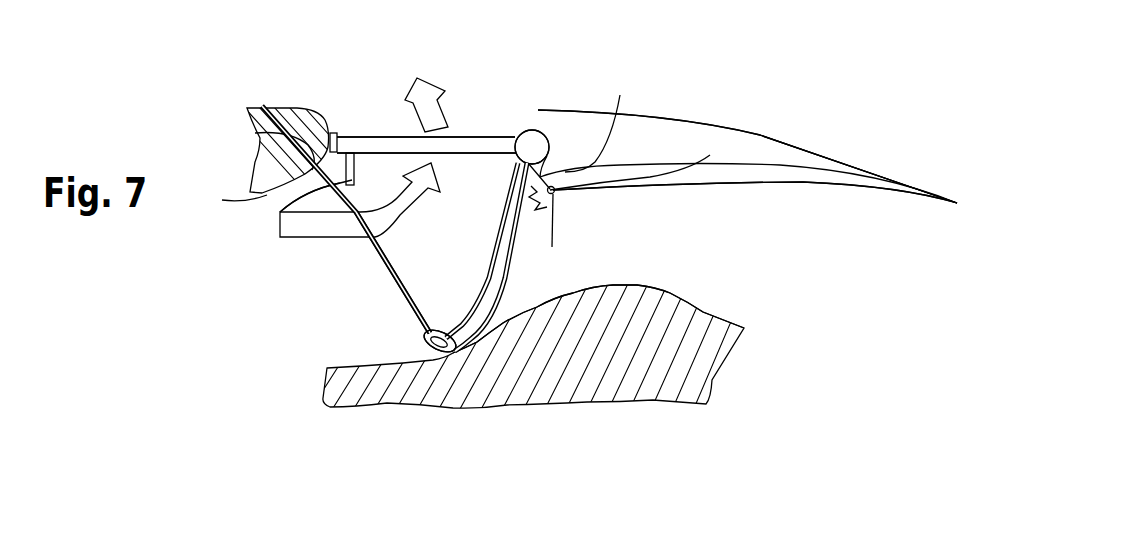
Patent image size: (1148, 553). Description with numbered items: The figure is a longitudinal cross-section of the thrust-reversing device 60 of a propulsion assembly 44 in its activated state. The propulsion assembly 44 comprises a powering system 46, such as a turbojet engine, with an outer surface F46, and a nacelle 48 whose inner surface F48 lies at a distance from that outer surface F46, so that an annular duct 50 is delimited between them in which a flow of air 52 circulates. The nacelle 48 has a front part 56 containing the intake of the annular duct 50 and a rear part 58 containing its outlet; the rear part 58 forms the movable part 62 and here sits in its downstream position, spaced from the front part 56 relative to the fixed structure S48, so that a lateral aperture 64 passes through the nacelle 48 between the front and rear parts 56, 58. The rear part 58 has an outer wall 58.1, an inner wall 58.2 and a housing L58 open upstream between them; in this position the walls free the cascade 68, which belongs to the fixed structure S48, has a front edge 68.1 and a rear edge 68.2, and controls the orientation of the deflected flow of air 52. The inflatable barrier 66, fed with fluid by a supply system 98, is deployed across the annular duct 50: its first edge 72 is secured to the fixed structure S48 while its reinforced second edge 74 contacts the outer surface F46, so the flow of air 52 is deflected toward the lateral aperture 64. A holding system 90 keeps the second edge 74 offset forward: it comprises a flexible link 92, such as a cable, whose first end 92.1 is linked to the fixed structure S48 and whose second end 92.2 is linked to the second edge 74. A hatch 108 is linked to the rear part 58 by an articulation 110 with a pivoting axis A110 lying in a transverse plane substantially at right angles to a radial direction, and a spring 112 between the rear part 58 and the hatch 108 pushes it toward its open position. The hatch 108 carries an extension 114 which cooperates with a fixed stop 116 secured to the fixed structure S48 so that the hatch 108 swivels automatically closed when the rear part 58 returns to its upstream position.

The propulsion assembly 44 is at (892, 165).
The powering system 46 is at (703, 373).
The outer surface of the powering system F46 is at (713, 322).
The nacelle 48 is at (281, 88).
The fixed structure of the nacelle S48 is at (347, 128).
The inner surface of the nacelle F48 is at (221, 200).
The annular duct 50 is at (694, 235).
The flow of air 52 is at (334, 239).
The front part of the nacelle 56 is at (261, 106).
The rear part of the nacelle 58 is at (818, 150).
The outer wall 58.1 is at (754, 131).
The inner wall 58.2 is at (803, 183).
The housing L58 is at (656, 148).
The thrust-reversing device 60 is at (494, 128).
The movable part 62 is at (655, 114).
The lateral aperture 64 is at (411, 106).
The inflatable barrier 66 is at (498, 272).
The cascade 68 is at (468, 128).
The front edge of the cascade 68.1 is at (346, 159).
The rear edge of the cascade 68.2 is at (524, 130).
The first edge of the inflatable barrier 72 is at (556, 158).
The second edge of the inflatable barrier 74 is at (436, 355).
The holding system 90 is at (390, 285).
The flexible link 92 is at (385, 263).
The first end of the flexible link 92.1 is at (330, 137).
The second end of the flexible link 92.2 is at (424, 335).
The supply system 98 is at (549, 129).
The hatch 108 is at (556, 230).
The articulation 110 is at (562, 200).
The pivoting axis A110 is at (655, 163).
The spring 112 is at (511, 212).
The extension 114 is at (605, 129).
The fixed stop 116 is at (281, 201).